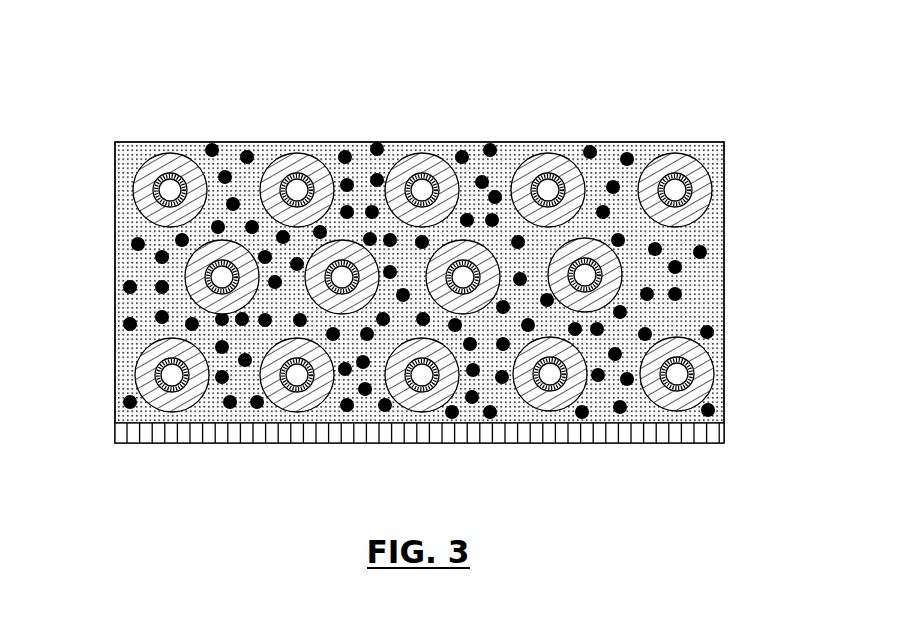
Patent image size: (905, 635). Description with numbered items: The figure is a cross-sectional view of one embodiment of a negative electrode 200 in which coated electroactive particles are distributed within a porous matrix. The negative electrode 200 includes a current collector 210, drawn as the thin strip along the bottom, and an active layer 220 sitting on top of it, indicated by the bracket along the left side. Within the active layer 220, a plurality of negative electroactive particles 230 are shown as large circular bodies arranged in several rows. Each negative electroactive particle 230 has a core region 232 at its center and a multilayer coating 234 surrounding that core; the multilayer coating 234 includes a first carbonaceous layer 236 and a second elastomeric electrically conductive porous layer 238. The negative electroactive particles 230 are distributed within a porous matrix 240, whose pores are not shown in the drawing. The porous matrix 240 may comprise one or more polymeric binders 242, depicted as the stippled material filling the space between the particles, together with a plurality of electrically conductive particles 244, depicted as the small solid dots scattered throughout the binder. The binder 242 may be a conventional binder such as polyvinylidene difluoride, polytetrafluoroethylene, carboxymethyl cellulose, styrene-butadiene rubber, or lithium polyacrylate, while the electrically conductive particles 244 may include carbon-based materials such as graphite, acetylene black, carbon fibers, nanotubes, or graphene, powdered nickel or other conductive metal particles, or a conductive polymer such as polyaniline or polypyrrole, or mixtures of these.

The negative electrode 200 is at (146, 97).
The current collector 210 is at (724, 432).
The active layer 220 is at (410, 221).
The negative electroactive particles 230 is at (461, 216).
The core region 232 is at (421, 186).
The multilayer coating 234 is at (430, 163).
The first carbonaceous layer 236 is at (547, 160).
The second elastomeric electrically conductive porous layer 238 is at (568, 160).
The porous matrix 240 is at (702, 227).
The polymeric binder 242 is at (693, 298).
The electrically conductive particles 244 is at (377, 142).